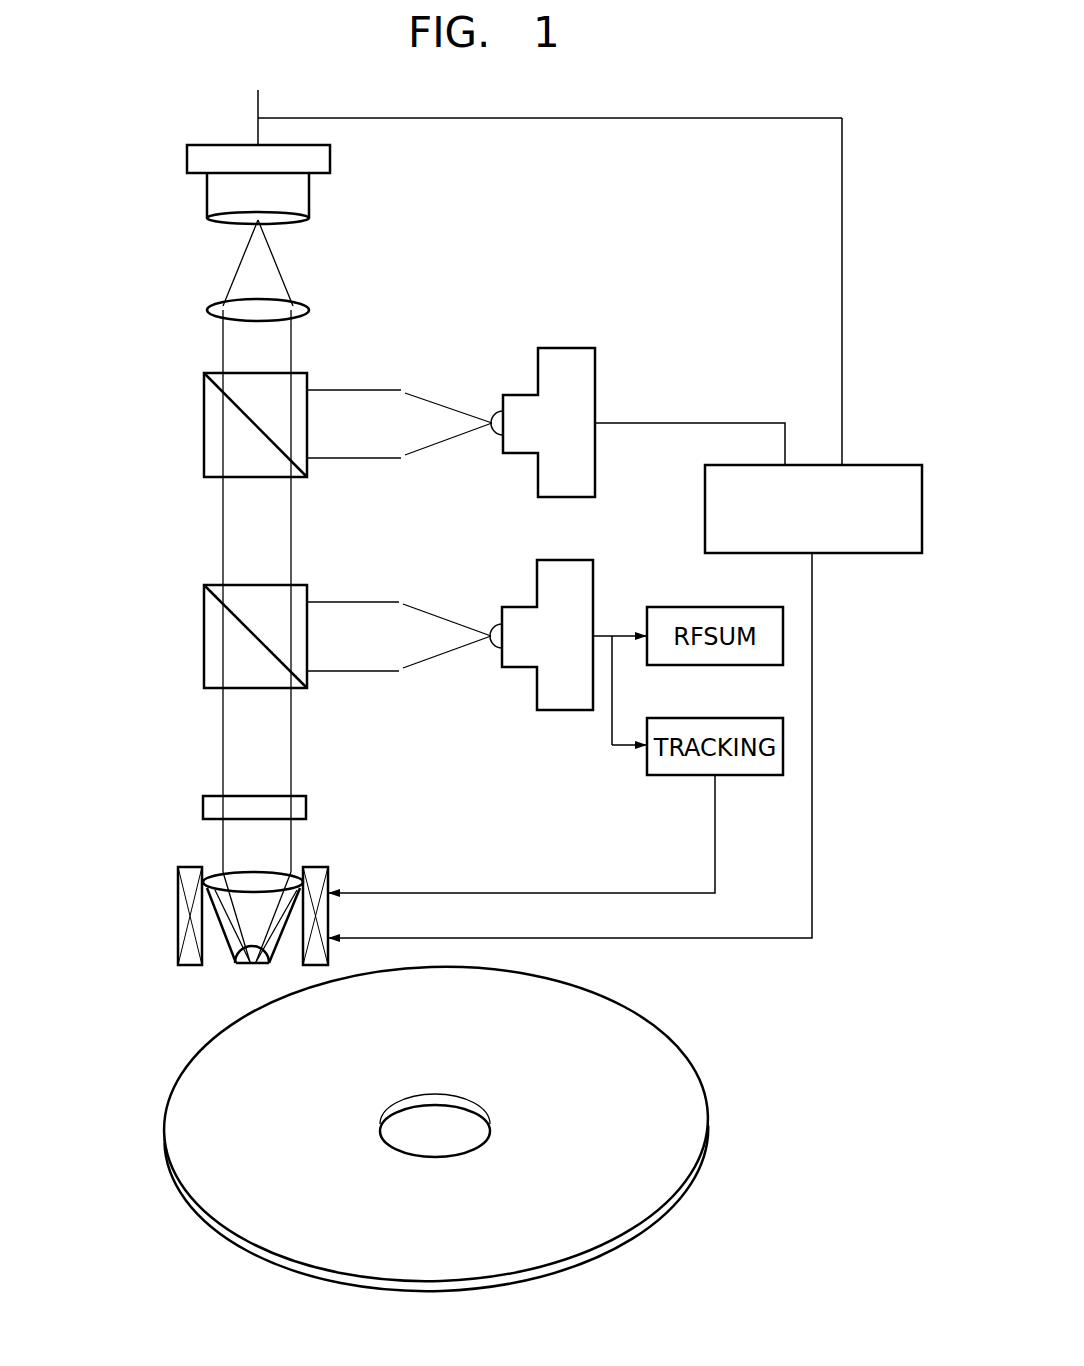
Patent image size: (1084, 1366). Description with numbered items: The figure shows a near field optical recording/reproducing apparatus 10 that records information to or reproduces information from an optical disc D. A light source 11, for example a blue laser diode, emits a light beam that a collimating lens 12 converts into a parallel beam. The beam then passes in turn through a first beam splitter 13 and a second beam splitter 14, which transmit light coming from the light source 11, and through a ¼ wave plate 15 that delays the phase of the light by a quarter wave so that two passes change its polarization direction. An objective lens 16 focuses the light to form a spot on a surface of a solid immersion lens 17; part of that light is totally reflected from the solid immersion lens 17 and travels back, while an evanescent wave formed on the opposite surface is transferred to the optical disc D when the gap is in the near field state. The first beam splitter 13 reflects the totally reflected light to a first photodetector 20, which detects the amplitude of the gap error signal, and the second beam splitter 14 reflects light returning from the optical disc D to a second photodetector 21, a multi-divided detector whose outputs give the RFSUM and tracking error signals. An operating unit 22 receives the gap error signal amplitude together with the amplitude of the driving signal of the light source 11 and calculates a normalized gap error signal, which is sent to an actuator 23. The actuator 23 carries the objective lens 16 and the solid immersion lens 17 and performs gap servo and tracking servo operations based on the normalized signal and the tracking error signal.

The near field optical recording/reproducing apparatus 10 is at (106, 152).
The light source 11 is at (207, 196).
The collimating lens 12 is at (207, 310).
The first beam splitter 13 is at (204, 426).
The second beam splitter 14 is at (204, 638).
The ¼ wave plate 15 is at (203, 810).
The objective lens 16 is at (215, 882).
The solid immersion lens 17 is at (243, 967).
The first photodetector 20 is at (566, 348).
The second photodetector 21 is at (563, 712).
The operating unit 22 is at (705, 508).
The actuator 23 is at (318, 867).
The optical disc D is at (187, 1100).